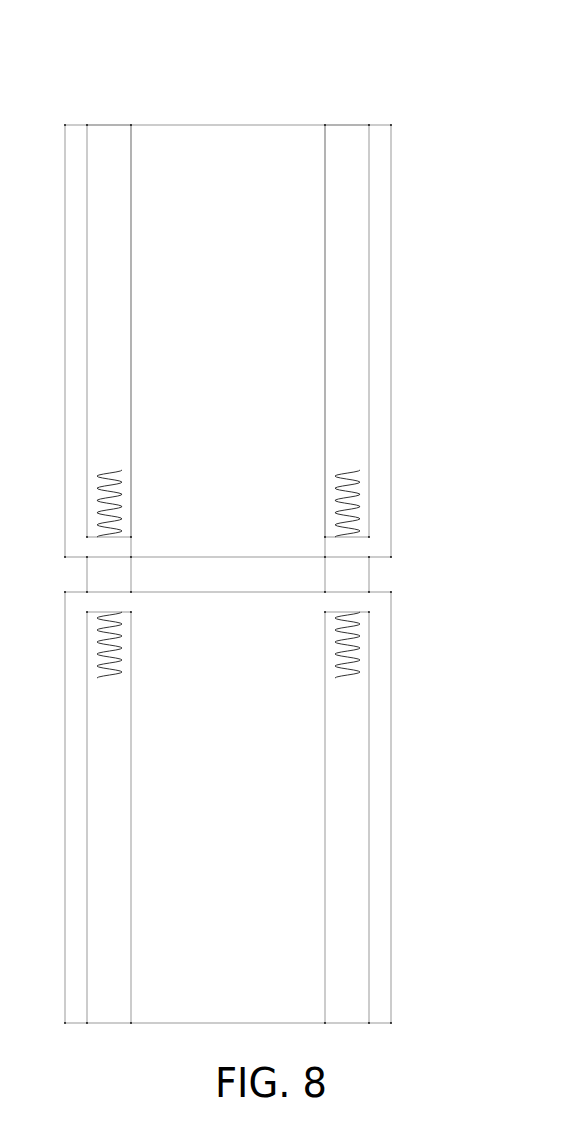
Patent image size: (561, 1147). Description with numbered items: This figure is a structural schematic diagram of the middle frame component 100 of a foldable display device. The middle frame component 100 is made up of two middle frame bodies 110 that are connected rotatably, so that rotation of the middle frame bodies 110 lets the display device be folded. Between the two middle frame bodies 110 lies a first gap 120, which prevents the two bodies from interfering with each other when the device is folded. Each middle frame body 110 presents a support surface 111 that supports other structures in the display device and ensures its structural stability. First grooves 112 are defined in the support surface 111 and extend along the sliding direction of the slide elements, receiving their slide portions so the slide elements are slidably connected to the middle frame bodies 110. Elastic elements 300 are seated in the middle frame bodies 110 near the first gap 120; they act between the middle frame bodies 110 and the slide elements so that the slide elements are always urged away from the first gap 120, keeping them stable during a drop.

The middle frame component 100 is at (222, 88).
The middle frame body 110 is at (378, 281).
The support surface 111 is at (258, 140).
The first groove 112 is at (118, 143).
The first gap 120 is at (293, 576).
The elastic element 300 is at (349, 509).